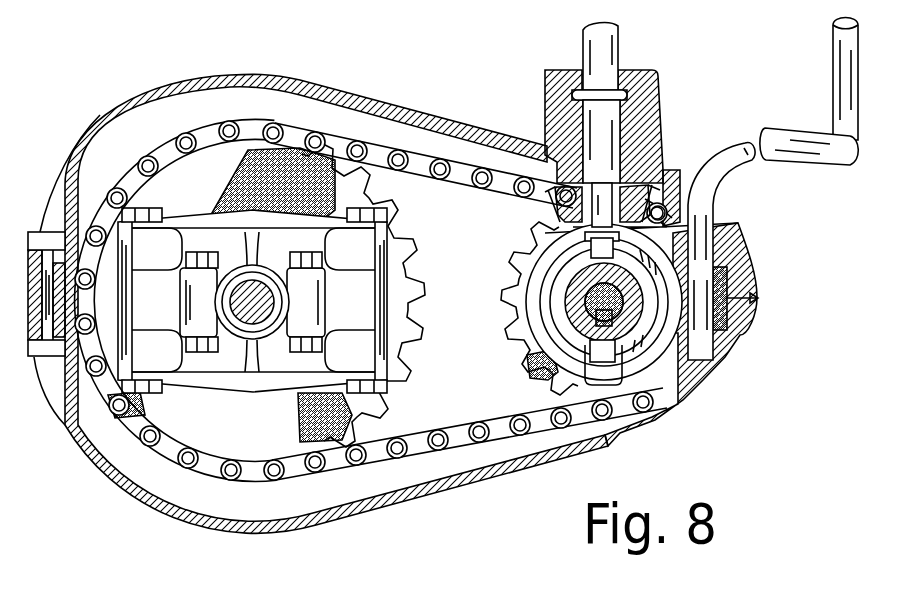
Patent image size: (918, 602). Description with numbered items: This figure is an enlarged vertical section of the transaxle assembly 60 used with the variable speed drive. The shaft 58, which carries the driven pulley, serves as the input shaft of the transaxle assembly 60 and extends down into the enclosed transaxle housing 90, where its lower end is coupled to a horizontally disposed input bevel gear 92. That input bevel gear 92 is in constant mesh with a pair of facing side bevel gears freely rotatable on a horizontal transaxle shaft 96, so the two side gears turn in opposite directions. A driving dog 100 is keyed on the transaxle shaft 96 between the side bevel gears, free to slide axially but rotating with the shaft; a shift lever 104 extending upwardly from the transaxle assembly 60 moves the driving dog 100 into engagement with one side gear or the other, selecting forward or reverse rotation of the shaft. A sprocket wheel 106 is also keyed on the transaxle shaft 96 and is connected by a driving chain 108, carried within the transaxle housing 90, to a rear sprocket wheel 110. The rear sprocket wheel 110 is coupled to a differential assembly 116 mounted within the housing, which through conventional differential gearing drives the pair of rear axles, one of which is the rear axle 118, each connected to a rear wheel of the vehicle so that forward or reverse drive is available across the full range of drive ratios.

The shaft 58 is at (603, 60).
The transaxle assembly 60 is at (446, 72).
The transaxle housing 90 is at (288, 76).
The input bevel gear 92 is at (642, 180).
The transaxle shaft 96 is at (595, 305).
The driving dog 100 is at (590, 258).
The shift lever 104 is at (717, 173).
The sprocket wheel 106 is at (498, 274).
The driving chain 108 is at (368, 440).
The rear sprocket wheel 110 is at (358, 193).
The differential assembly 116 is at (250, 403).
The rear axle 118 is at (268, 290).